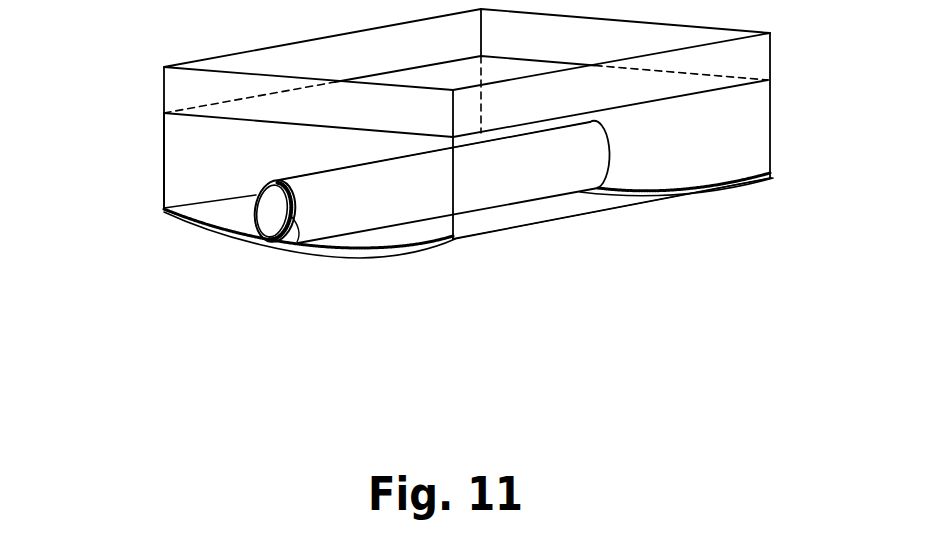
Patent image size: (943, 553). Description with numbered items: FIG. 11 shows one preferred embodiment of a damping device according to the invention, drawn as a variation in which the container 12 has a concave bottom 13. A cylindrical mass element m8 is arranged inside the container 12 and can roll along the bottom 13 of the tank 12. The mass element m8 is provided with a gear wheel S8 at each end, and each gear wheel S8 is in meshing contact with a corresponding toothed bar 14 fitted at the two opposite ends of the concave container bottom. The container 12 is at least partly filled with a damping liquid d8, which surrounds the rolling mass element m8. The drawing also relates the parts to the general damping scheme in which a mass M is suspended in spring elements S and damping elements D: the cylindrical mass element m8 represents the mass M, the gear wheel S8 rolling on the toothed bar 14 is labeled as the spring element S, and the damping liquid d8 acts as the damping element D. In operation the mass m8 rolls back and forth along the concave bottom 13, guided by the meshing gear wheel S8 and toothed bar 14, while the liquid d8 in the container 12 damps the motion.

The container 12 is at (768, 107).
The bottom 13 is at (493, 222).
The toothed bar 14 is at (270, 243).
The damping liquid d8 is at (187, 170).
The cylindrical mass element m8 is at (555, 173).
The gear wheel S8 is at (291, 225).
The damping element D is at (466, 106).
The spring element S is at (253, 240).
The mass M is at (434, 169).